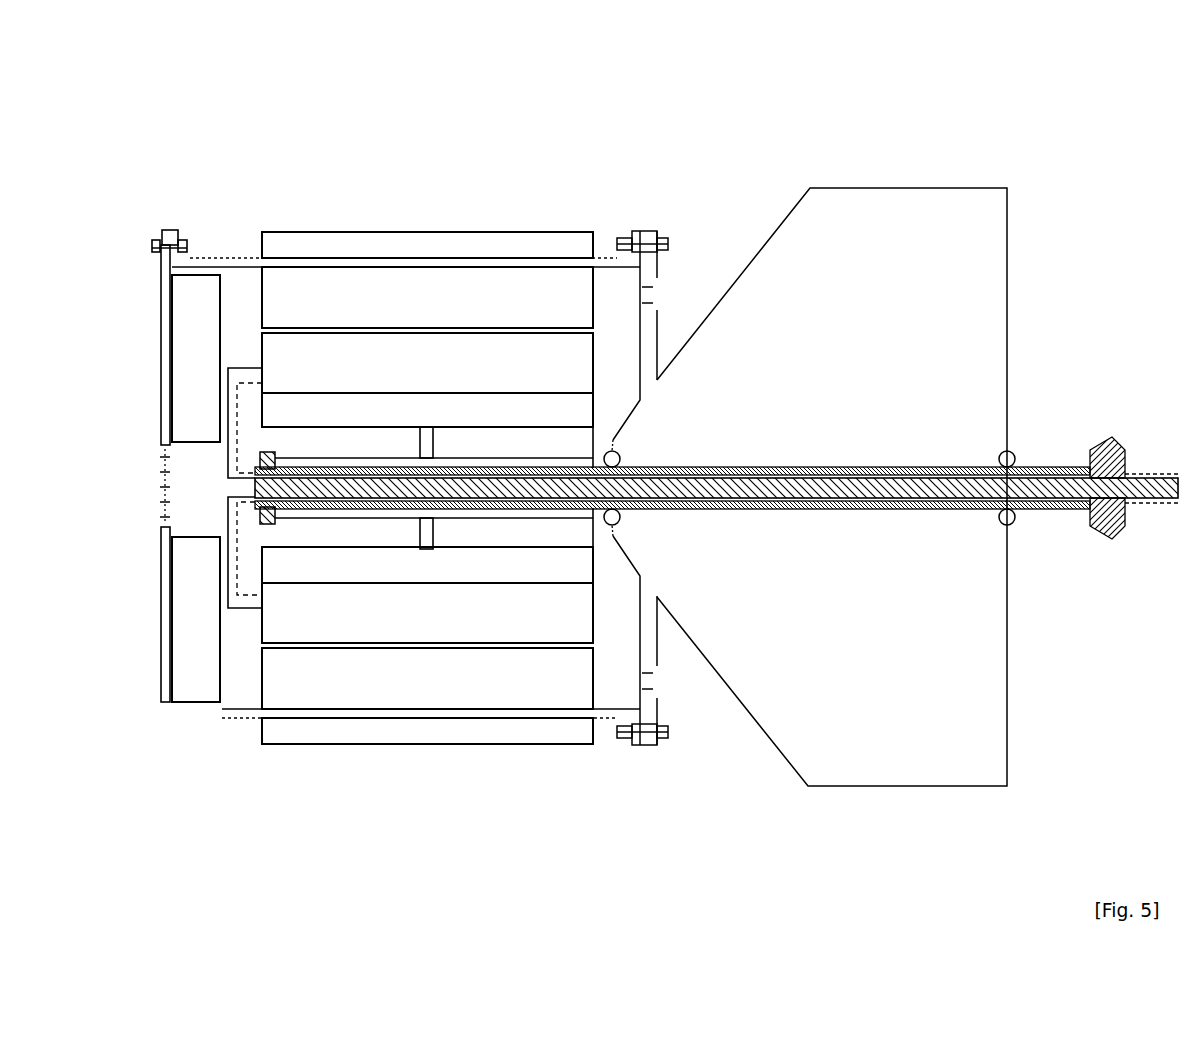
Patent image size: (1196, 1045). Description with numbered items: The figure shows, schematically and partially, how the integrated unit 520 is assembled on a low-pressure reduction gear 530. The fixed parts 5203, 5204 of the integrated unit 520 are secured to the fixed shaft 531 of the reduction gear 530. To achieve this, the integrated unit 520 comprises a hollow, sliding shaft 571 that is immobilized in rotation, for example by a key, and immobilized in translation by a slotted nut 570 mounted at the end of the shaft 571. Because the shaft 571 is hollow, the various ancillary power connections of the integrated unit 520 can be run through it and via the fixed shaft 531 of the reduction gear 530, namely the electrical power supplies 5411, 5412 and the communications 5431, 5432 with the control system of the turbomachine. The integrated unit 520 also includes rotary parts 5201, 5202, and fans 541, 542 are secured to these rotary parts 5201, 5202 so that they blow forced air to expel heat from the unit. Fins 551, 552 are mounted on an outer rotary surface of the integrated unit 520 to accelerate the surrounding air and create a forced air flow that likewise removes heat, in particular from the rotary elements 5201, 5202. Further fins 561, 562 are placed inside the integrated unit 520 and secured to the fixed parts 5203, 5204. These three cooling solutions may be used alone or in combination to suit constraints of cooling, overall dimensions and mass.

The integrated unit 520 is at (250, 125).
The fan 541 is at (195, 313).
The fan 542 is at (193, 708).
The slotted nut 570 is at (265, 453).
The hollow shaft 571 is at (333, 520).
The fin 551 is at (577, 245).
The fin 552 is at (287, 730).
The rotary part 5201 is at (468, 300).
The rotary part 5202 is at (477, 683).
The fixed part 5203 is at (400, 363).
The fixed part 5204 is at (350, 608).
The fin 561 is at (573, 413).
The fin 562 is at (550, 568).
The low-pressure reduction gear 530 is at (930, 740).
The fixed shaft 531 is at (750, 487).
The electrical power supply 5411 is at (1125, 473).
The electrical power supply 5412 is at (1122, 507).
The communication 5431 is at (1162, 472).
The communication 5432 is at (1173, 503).